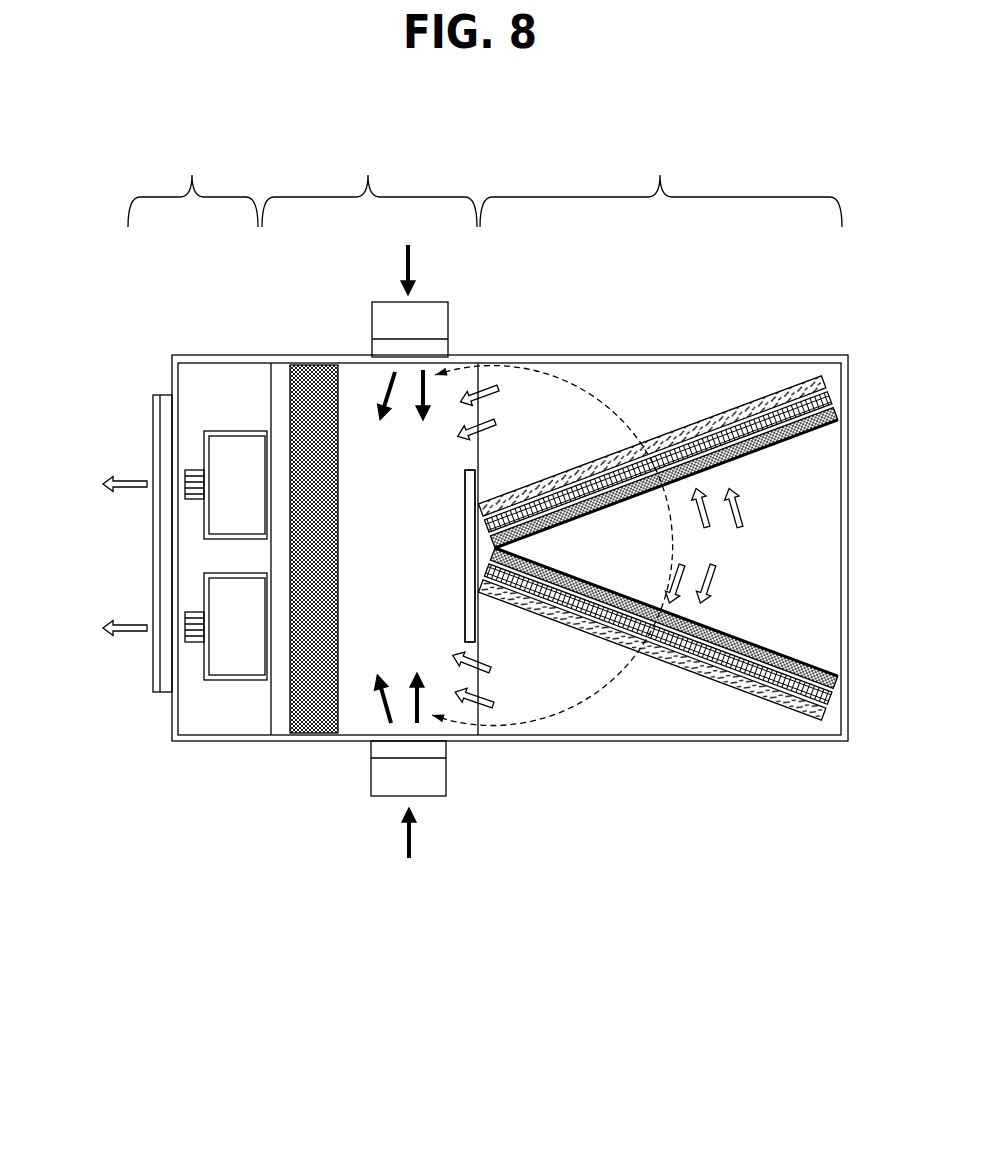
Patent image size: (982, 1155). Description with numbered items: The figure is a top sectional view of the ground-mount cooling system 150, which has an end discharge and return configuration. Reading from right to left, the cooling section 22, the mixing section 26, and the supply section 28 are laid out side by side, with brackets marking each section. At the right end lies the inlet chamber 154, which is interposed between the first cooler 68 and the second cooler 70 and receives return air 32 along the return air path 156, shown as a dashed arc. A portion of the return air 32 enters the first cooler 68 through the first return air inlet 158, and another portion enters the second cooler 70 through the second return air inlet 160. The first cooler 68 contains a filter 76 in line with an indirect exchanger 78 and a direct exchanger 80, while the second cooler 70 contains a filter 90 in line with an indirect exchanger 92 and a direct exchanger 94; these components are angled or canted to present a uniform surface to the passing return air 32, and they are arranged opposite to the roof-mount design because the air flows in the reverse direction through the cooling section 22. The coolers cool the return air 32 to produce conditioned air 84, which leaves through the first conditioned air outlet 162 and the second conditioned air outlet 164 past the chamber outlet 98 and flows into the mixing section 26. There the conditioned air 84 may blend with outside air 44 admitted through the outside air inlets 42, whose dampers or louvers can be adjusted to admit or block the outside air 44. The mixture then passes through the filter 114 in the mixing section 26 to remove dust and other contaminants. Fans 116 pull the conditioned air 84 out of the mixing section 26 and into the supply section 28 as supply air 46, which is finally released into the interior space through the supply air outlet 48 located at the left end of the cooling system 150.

The cooling system 150 is at (463, 1002).
The supply section 28 is at (192, 172).
The mixing section 26 is at (368, 172).
The cooling section 22 is at (660, 172).
The supply air outlet 48 is at (160, 682).
The fans 116 is at (252, 437).
The supply air 46 is at (130, 482).
The filter 114 is at (318, 378).
The outside air inlets 42 is at (433, 310).
The outside air 44 is at (407, 260).
The chamber outlet 98 is at (480, 363).
The second conditioned air outlet 164 is at (478, 452).
The first conditioned air outlet 162 is at (463, 650).
The conditioned air 84 is at (490, 424).
The return air path 156 is at (592, 395).
The second cooler 70 is at (666, 412).
The filter 90 is at (603, 497).
The indirect exchanger 92 is at (620, 472).
The direct exchanger 94 is at (637, 447).
The second return air inlet 160 is at (798, 442).
The first cooler 68 is at (665, 686).
The filter 76 is at (643, 615).
The indirect exchanger 78 is at (655, 630).
The direct exchanger 80 is at (686, 655).
The first return air inlet 158 is at (800, 652).
The return air 32 is at (738, 523).
The inlet chamber 154 is at (819, 560).